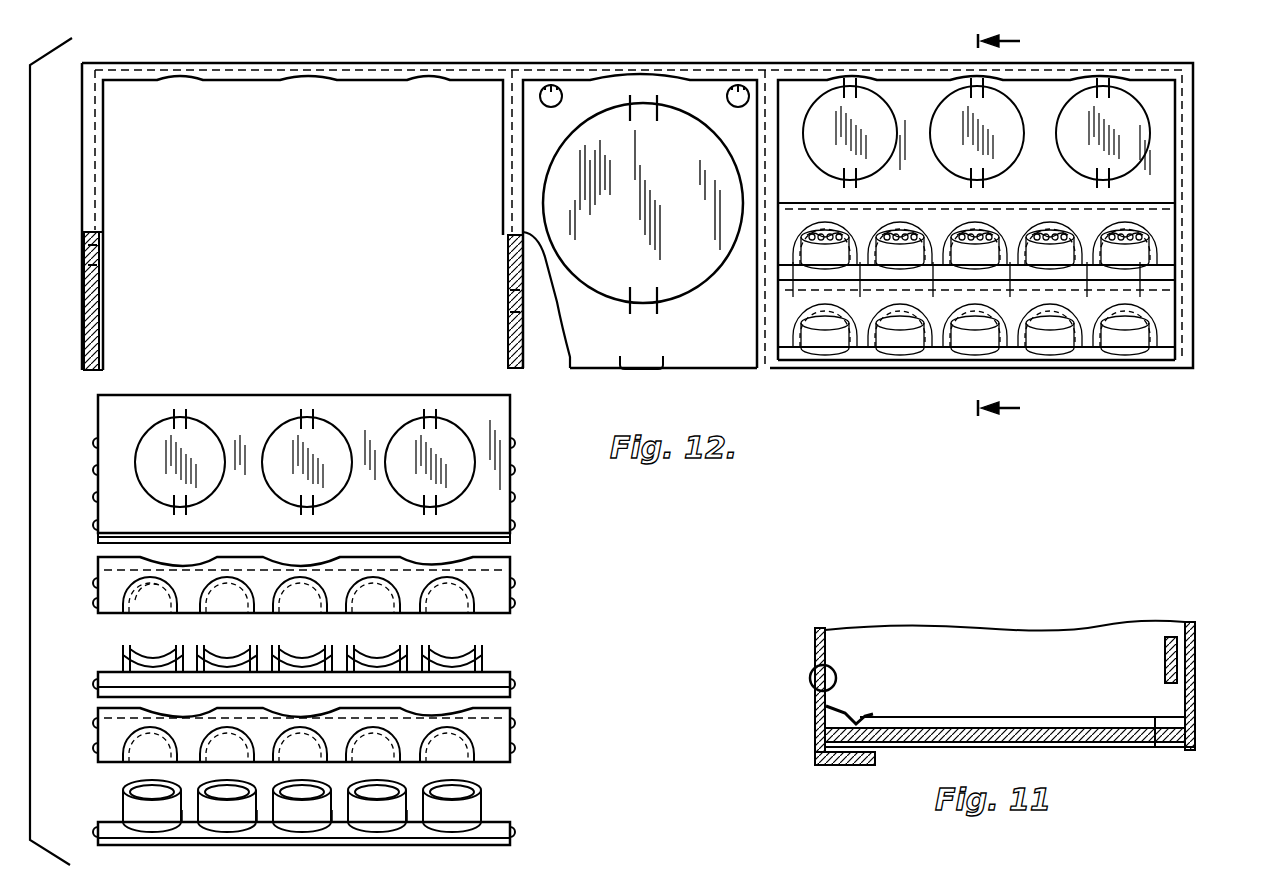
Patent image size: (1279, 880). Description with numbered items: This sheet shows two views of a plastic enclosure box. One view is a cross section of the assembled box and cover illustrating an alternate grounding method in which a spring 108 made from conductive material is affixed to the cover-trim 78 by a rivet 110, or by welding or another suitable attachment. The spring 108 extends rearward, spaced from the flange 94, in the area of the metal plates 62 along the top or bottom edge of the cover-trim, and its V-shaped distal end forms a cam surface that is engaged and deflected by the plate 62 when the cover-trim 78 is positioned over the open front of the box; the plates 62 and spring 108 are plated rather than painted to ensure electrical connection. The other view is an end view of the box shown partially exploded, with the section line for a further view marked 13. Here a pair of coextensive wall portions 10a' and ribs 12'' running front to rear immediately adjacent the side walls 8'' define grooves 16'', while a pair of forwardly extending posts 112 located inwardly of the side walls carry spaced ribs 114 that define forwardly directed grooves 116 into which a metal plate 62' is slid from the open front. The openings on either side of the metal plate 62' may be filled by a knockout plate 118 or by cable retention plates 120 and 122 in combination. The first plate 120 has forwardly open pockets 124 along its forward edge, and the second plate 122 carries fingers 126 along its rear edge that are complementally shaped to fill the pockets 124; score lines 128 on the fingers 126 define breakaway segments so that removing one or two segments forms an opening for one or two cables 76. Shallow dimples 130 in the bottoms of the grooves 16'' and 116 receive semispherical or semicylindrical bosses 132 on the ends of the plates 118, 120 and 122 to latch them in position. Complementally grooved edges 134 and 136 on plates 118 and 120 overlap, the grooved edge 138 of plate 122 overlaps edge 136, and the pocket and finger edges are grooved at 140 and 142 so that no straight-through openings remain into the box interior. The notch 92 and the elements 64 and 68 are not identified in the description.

In FIG. 12, the wall portion 10a' is at (667, 216).
In FIG. 12, the side wall 8'' is at (70, 301).
In FIG. 12, the groove 16'' is at (140, 301).
In FIG. 12, the rib 12'' is at (132, 291).
In FIG. 12, the dimple 130 is at (97, 266).
In FIG. 12, the rib 114 is at (515, 146).
In FIG. 12, the groove 116 is at (512, 258).
In FIG. 12, the metal plate 62' is at (636, 226).
In FIG. 12, the post 112 is at (514, 368).
In FIG. 12, the notch 92 is at (644, 370).
In FIG. 12, the section line 13 is at (1015, 228).
In FIG. 12, the plastic plate 118 is at (1160, 165).
In FIG. 12, the cable 76 is at (1128, 228).
In FIG. 12, the first plate 120 is at (1163, 217).
In FIG. 12, the pocket 124 is at (907, 318).
In FIG. 12, the second plate 122 is at (1165, 273).
In FIG. 12, the finger 126 is at (1128, 324).
In FIG. 12, the grooved edge 138 is at (1147, 363).
In FIG. 12, the boss 132 is at (94, 525).
In FIG. 12, the grooved edge 136 is at (233, 563).
In FIG. 12, the grooved edge 134 is at (369, 538).
In FIG. 12, the groove 140 is at (128, 610).
In FIG. 12, the score line 128 is at (238, 667).
In FIG. 12, the groove 142 is at (185, 780).
In FIG. 11, the cover-trim 78 is at (815, 748).
In FIG. 11, the flange 94 is at (863, 767).
In FIG. 11, the rear post 64 is at (1197, 675).
In FIG. 11, the retaining bar 68 is at (1163, 648).
In FIG. 11, the metal plate 62 is at (1010, 751).
In FIG. 11, the spring 108 is at (847, 708).
In FIG. 11, the rivet 110 is at (808, 678).